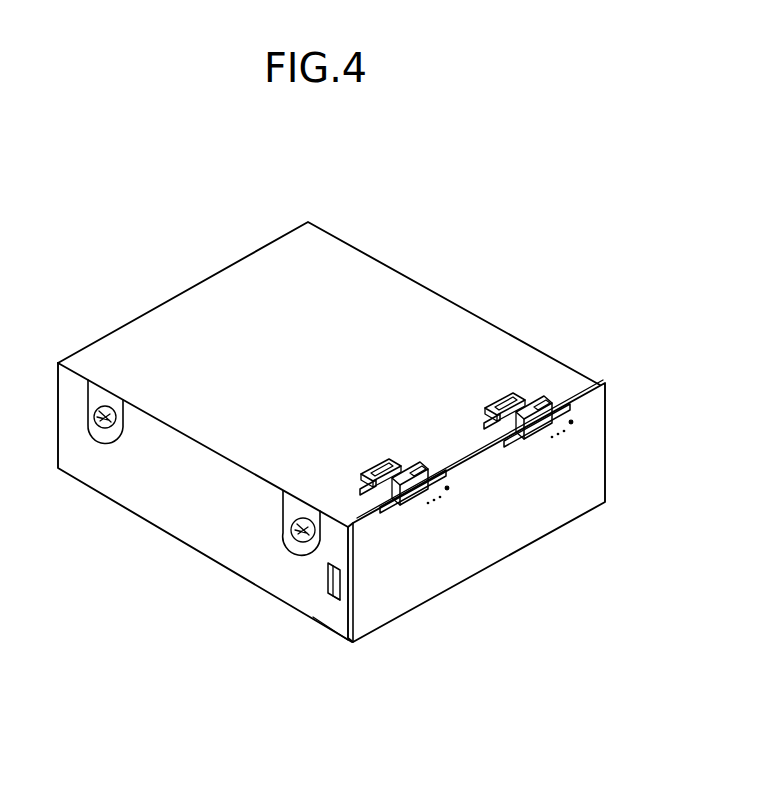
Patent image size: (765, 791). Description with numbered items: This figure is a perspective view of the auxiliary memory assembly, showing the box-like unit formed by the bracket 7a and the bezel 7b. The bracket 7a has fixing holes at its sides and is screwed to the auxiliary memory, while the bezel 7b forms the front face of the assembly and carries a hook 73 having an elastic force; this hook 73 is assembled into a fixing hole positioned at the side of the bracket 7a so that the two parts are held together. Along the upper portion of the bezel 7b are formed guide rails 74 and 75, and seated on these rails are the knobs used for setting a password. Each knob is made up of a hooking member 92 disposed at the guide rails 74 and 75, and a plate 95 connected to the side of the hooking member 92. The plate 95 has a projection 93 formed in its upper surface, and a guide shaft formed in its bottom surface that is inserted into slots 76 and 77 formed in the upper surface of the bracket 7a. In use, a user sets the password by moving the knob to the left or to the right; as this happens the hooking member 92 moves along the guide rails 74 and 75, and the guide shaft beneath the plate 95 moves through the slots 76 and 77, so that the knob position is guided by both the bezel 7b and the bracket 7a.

The bracket 7a is at (395, 283).
The bezel 7b is at (502, 540).
The hook 73 is at (333, 587).
The guide rail 74 is at (447, 478).
The guide rail 75 is at (578, 410).
The slot 76 is at (533, 402).
The slot 77 is at (367, 492).
The hooking member 92 is at (422, 477).
The projection 93 is at (388, 477).
The plate 95 is at (363, 447).